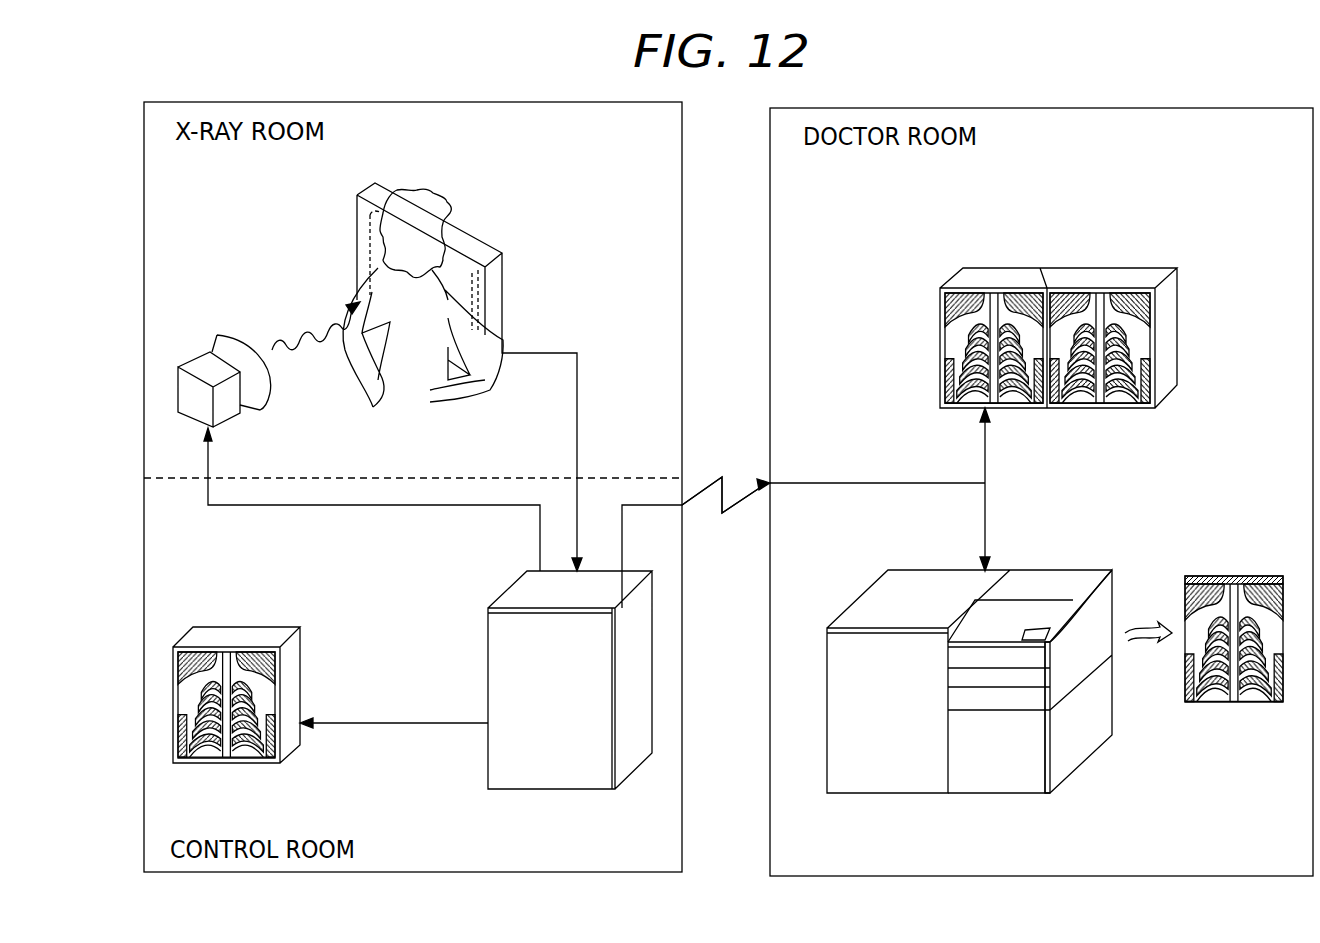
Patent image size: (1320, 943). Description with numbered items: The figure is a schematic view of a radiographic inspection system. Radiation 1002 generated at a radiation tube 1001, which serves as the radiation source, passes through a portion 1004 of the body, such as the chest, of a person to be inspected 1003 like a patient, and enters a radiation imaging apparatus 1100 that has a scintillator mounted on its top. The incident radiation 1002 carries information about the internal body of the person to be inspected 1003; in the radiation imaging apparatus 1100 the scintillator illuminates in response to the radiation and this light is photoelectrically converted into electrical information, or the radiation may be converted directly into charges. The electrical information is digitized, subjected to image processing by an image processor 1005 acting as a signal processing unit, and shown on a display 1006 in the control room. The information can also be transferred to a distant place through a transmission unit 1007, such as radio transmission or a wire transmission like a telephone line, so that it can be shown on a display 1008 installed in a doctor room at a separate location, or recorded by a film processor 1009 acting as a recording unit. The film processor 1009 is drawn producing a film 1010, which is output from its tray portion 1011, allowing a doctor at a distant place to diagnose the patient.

The radiation tube 1001 is at (203, 362).
The radiation 1002 is at (308, 325).
The person to be inspected 1003 is at (445, 192).
The radiation imaging apparatus 1100 is at (480, 283).
The portion of the body 1004 is at (412, 352).
The image processor 1005 is at (522, 780).
The display 1006 is at (241, 627).
The transmission unit 1007 is at (713, 475).
The display 1008 is at (985, 275).
The film processor 1009 is at (880, 783).
The film 1010 is at (1207, 576).
The film output tray 1011 is at (1035, 750).